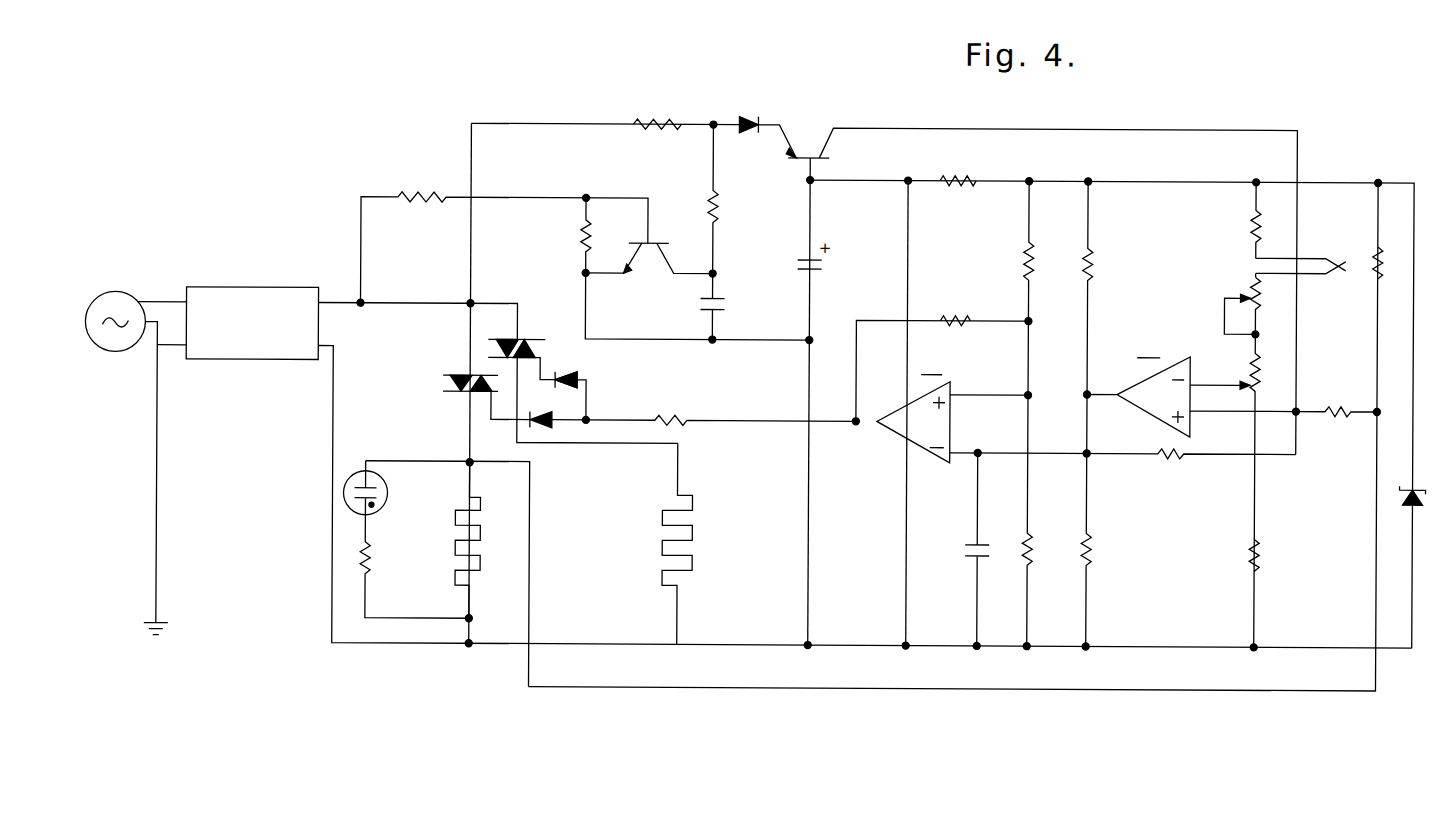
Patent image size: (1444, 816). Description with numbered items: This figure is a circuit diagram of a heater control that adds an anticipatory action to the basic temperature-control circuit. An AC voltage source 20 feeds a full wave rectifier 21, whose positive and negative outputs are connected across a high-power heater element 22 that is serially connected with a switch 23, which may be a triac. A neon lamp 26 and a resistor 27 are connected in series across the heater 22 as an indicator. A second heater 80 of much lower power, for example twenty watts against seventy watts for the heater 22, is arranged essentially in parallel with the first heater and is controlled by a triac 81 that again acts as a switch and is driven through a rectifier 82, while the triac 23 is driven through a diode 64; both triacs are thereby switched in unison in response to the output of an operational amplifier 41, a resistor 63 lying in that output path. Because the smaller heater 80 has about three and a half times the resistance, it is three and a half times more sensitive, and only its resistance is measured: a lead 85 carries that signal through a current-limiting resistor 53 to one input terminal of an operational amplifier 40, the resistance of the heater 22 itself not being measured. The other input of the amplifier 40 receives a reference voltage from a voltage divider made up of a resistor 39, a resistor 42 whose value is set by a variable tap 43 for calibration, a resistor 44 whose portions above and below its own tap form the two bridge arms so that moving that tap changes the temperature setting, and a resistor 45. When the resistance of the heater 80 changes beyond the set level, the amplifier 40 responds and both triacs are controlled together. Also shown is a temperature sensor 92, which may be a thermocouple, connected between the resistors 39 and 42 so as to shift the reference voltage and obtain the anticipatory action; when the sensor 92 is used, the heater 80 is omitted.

The AC voltage source 20 is at (104, 292).
The full wave rectifier 21 is at (186, 288).
The heater element 22 is at (693, 497).
The switch 23 is at (545, 340).
The neon lamp 26 is at (389, 496).
The resistor 27 is at (370, 565).
The resistor 39 is at (1250, 224).
The operational amplifier 40 is at (1192, 386).
The operational amplifier 41 is at (1076, 394).
The resistor 42 is at (1260, 293).
The tap 43 is at (1238, 296).
The resistor 44 is at (1261, 362).
The resistor 45 is at (1250, 560).
The current-limiting resistor 53 is at (1325, 409).
The resistor 63 is at (683, 416).
The diode 64 is at (568, 379).
The second heater 80 is at (481, 545).
The triac 81 is at (455, 376).
The rectifier 82 is at (545, 431).
The lead 85 is at (1150, 690).
The temperature sensor 92 is at (1323, 257).